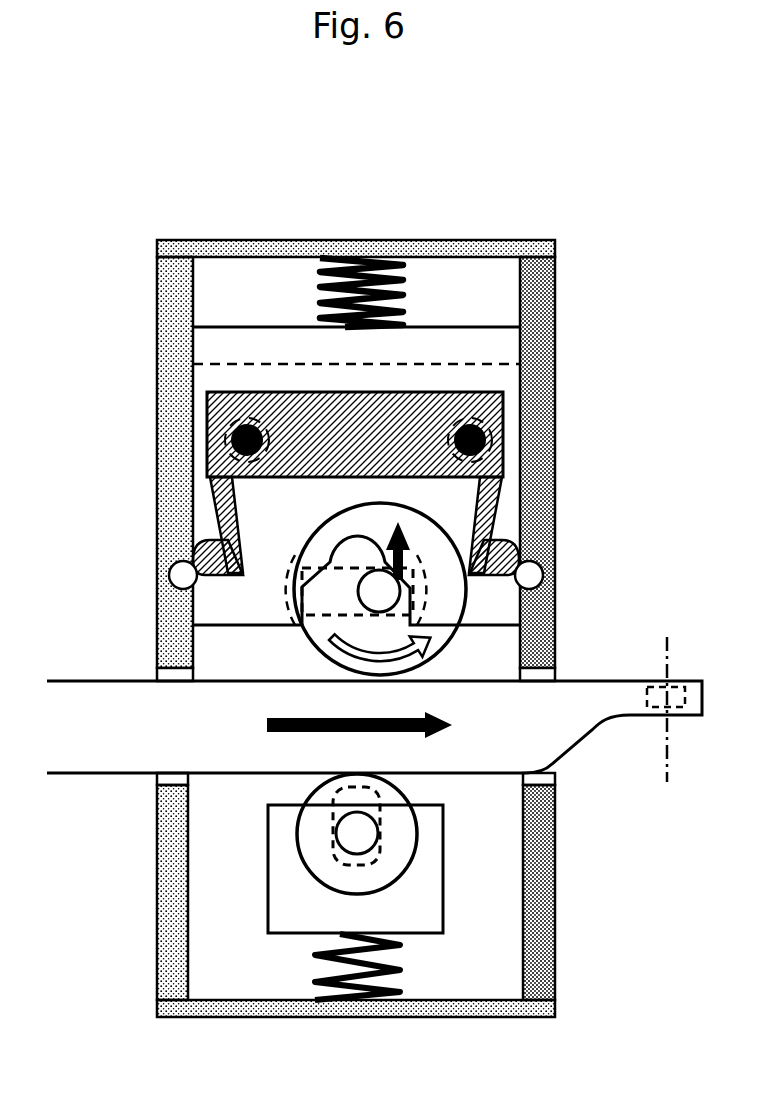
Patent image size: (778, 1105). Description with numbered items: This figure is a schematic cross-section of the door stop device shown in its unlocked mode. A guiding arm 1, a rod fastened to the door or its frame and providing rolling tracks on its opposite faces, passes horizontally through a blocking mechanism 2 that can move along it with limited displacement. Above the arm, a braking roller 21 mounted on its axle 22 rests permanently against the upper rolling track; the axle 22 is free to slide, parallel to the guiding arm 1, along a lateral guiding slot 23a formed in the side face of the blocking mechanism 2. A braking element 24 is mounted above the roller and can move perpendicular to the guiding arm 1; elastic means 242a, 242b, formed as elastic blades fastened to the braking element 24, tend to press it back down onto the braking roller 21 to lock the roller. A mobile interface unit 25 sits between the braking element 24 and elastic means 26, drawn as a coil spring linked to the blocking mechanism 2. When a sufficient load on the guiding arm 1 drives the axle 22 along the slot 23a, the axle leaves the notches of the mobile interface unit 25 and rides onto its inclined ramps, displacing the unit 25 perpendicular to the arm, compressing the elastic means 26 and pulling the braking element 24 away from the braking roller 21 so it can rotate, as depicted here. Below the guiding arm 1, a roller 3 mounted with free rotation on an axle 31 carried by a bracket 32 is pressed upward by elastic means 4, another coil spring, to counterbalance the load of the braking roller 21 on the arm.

The guiding arm 1 is at (550, 710).
The blocking mechanism 2 is at (466, 252).
The roller 3 is at (398, 827).
The elastic means 4 is at (398, 968).
The braking roller 21 is at (420, 550).
The axle 22 is at (385, 592).
The lateral guiding slot 23a is at (292, 588).
The braking element 24 is at (397, 392).
The mobile interface unit 25 is at (380, 350).
The elastic means 26 is at (398, 298).
The axle 31 is at (353, 845).
The bracket 32 is at (412, 915).
The elastic means 242a is at (220, 520).
The elastic means 242b is at (498, 517).